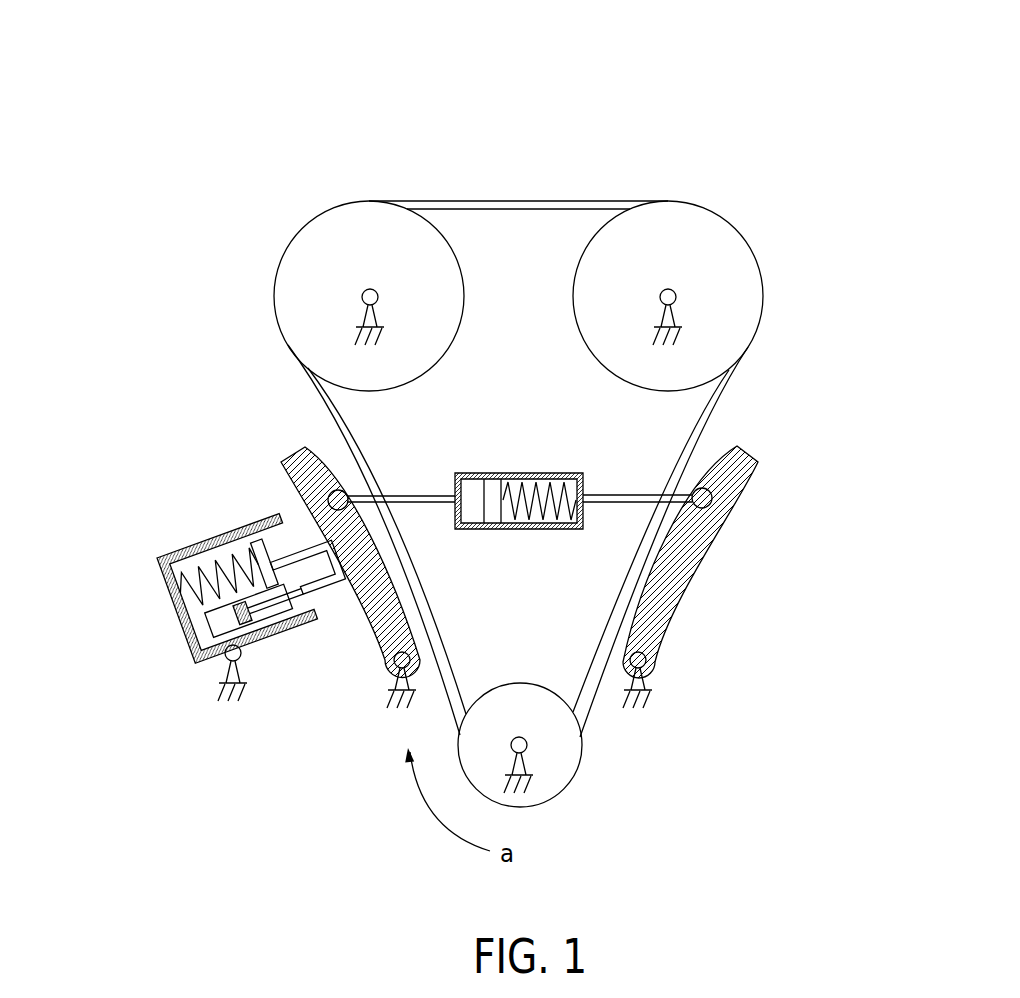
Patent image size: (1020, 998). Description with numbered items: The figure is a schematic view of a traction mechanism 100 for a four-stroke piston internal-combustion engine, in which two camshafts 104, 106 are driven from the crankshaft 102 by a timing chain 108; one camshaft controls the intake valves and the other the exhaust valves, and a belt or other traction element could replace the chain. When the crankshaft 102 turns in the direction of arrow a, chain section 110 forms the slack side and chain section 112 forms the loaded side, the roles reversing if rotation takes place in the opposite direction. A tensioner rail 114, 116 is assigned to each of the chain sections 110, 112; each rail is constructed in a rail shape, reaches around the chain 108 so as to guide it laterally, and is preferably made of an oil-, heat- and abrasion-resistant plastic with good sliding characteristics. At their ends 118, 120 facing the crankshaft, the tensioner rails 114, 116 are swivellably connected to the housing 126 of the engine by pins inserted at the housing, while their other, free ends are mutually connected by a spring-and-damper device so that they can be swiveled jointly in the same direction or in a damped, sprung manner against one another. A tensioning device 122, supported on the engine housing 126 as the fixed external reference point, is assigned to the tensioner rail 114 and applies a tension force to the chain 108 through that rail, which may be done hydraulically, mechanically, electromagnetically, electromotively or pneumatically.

The traction mechanism 100 is at (822, 178).
The crankshaft 102 is at (540, 752).
The camshaft 104 is at (327, 265).
The camshaft 106 is at (687, 240).
The timing chain 108 is at (517, 198).
The chain section 110 is at (330, 405).
The chain section 112 is at (698, 427).
The tensioner rail 114 is at (297, 477).
The tensioner rail 116 is at (695, 560).
The end of tensioner rail 118 is at (395, 668).
The end of tensioner rail 120 is at (655, 667).
The tensioning device 122 is at (203, 632).
The internal-combustion engine housing 126 is at (213, 697).